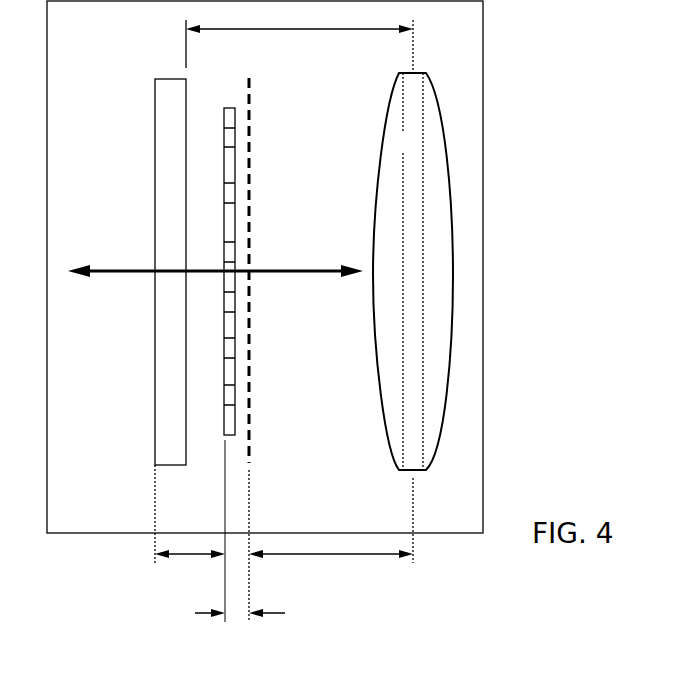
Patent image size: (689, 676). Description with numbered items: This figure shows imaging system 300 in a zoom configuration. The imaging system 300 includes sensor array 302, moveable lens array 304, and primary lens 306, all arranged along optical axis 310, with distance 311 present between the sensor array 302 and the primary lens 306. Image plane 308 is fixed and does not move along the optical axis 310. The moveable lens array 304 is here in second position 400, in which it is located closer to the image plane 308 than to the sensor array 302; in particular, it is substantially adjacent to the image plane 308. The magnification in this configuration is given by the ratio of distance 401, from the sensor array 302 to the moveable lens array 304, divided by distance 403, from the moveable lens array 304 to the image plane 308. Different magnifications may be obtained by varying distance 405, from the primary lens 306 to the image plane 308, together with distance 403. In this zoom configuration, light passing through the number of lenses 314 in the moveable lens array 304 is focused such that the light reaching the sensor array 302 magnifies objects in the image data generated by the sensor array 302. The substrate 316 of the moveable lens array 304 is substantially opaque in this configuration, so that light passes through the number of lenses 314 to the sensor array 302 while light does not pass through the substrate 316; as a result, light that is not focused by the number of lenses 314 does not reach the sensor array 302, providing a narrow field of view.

The imaging system 300 is at (486, 157).
The sensor array 302 is at (155, 188).
The moveable lens array 304 is at (230, 106).
The primary lens 306 is at (372, 313).
The image plane 308 is at (253, 108).
The optical axis 310 is at (127, 275).
The distance 311 is at (330, 32).
The number of lenses 314 is at (258, 197).
The substrate 316 is at (237, 169).
The second position 400 is at (256, 472).
The distance 401 is at (190, 556).
The distance 403 is at (207, 614).
The distance 405 is at (332, 557).